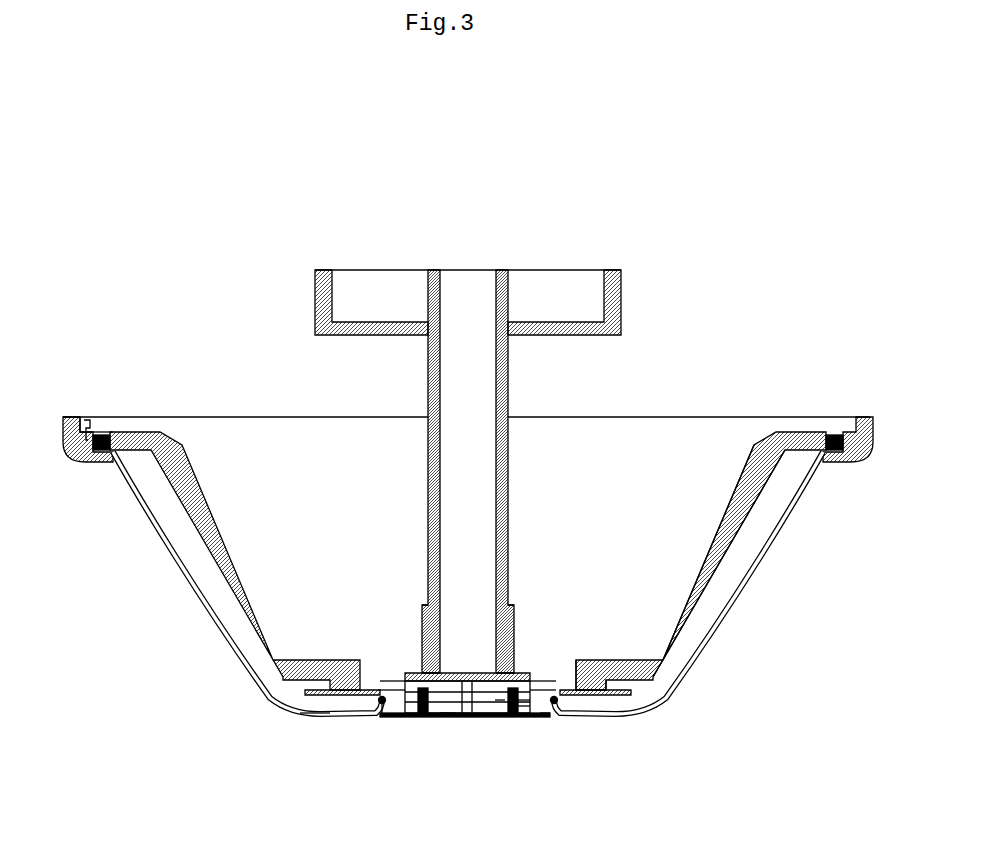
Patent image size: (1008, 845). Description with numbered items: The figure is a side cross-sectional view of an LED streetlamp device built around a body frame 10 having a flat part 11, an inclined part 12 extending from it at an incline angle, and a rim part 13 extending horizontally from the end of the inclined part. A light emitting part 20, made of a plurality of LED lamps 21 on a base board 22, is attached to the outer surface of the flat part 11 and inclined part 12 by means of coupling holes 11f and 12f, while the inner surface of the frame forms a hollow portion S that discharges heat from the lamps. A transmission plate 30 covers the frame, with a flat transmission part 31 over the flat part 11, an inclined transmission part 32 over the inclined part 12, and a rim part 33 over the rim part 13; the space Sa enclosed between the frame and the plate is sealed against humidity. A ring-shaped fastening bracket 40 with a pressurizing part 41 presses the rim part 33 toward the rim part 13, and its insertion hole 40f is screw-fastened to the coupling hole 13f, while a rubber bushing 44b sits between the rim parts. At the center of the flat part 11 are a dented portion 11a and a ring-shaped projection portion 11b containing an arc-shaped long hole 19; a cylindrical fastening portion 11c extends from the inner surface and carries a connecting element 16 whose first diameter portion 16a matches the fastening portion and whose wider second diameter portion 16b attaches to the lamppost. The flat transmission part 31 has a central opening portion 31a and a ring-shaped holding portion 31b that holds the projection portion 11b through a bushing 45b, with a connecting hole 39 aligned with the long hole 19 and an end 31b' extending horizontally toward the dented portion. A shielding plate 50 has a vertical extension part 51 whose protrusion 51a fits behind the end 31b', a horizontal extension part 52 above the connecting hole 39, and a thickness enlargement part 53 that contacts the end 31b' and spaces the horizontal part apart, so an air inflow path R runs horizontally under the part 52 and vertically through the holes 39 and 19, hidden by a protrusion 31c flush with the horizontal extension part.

The hollow portion S is at (614, 486).
The space Sa is at (163, 516).
The air inflow path R is at (549, 717).
The body frame 10 is at (680, 662).
The flat part 11 is at (620, 702).
The central dented portion 11a is at (447, 718).
The ring-shaped projection portion 11b is at (387, 718).
The fastening portion 11c is at (513, 622).
The coupling hole 11f is at (590, 672).
The inclined part 12 is at (653, 686).
The coupling hole 12f is at (698, 562).
The rim part 13 is at (806, 452).
The coupling hole 13f is at (85, 418).
The connecting element 16 is at (400, 390).
The first diameter portion 16a is at (427, 600).
The second diameter portion 16b is at (316, 304).
The long hole 19 is at (400, 676).
The light emitting part 20 is at (703, 642).
The LED lamp 21 is at (700, 596).
The base board 22 is at (707, 615).
The transmission plate 30 is at (158, 570).
The flat transmission part 31 is at (330, 728).
The central opening portion 31a is at (502, 714).
The ring-shaped holding portion 31b is at (513, 757).
The end of the ring-shaped holding portion 31b' is at (467, 661).
The protrusion 31c is at (325, 718).
The inclined transmission part 32 is at (183, 588).
The rim part 33 is at (110, 418).
The connecting hole 39 is at (467, 667).
The fastening bracket 40 is at (63, 452).
The insertion hole 40f is at (86, 456).
The pressurizing part 41 is at (106, 458).
The bushing 44b is at (99, 418).
The bushing 45b is at (377, 678).
The shielding plate 50 is at (460, 730).
The vertical extension part 51 is at (520, 674).
The protrusion 51a is at (532, 680).
The horizontal extension part 52 is at (563, 679).
The thickness enlargement part 53 is at (548, 683).